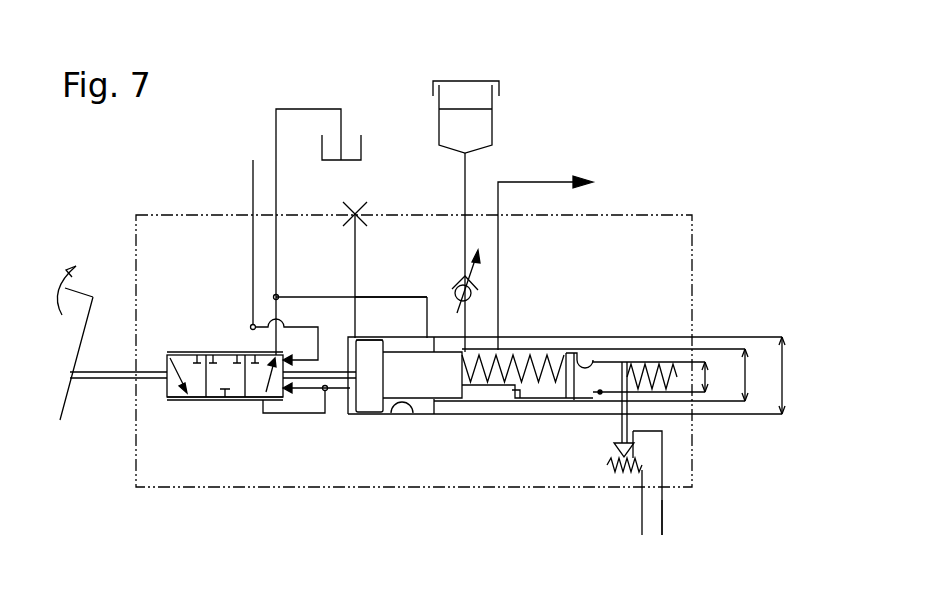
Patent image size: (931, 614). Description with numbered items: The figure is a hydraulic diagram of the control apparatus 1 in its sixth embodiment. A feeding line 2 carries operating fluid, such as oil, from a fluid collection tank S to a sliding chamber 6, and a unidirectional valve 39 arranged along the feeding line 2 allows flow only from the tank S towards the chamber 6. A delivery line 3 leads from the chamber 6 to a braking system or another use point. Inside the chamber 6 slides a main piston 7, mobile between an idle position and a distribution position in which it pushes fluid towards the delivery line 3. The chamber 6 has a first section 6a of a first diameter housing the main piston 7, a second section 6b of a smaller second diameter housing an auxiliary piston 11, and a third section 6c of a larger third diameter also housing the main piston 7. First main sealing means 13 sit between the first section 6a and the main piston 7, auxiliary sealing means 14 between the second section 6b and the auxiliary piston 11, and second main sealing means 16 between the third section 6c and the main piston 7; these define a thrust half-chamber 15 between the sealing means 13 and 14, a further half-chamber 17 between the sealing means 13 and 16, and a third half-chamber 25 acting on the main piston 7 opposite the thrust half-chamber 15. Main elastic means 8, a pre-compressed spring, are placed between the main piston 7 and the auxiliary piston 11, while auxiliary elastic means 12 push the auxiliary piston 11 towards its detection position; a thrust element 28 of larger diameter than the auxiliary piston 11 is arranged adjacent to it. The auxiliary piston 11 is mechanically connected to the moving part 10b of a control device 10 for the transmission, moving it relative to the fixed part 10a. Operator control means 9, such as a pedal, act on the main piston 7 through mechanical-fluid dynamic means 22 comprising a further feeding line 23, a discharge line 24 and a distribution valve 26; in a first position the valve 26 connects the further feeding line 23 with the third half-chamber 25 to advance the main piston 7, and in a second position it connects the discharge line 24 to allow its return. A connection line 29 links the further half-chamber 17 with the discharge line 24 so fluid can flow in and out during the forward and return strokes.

The apparatus 1 is at (160, 206).
The feeding line 2 is at (465, 190).
The delivery line 3 is at (530, 182).
The sliding chamber 6 is at (548, 355).
The first section 6a is at (488, 401).
The second section 6b is at (578, 353).
The third section 6c is at (395, 406).
The main piston 7 is at (358, 402).
The main elastic means 8 is at (465, 401).
The control means 9 is at (85, 290).
The control device 10 is at (664, 453).
The fixed part 10a is at (662, 500).
The moving part 10b is at (628, 425).
The auxiliary piston 11 is at (600, 392).
The auxiliary elastic means 12 is at (655, 362).
The first main sealing means 13 is at (443, 412).
The auxiliary sealing means 14 is at (600, 362).
The thrust half-chamber 15 is at (530, 400).
The second main sealing means 16 is at (372, 338).
The further half-chamber 17 is at (440, 352).
The mechanical-fluid dynamic means 22 is at (236, 352).
The further feeding line 23 is at (253, 188).
The discharge line 24 is at (276, 130).
The third half-chamber 25 is at (345, 402).
The distribution valve 26 is at (188, 393).
The thrust element 28 is at (555, 400).
The connection line 29 is at (370, 297).
The unidirectional valve 39 is at (477, 287).
The fluid collection tank S is at (467, 125).